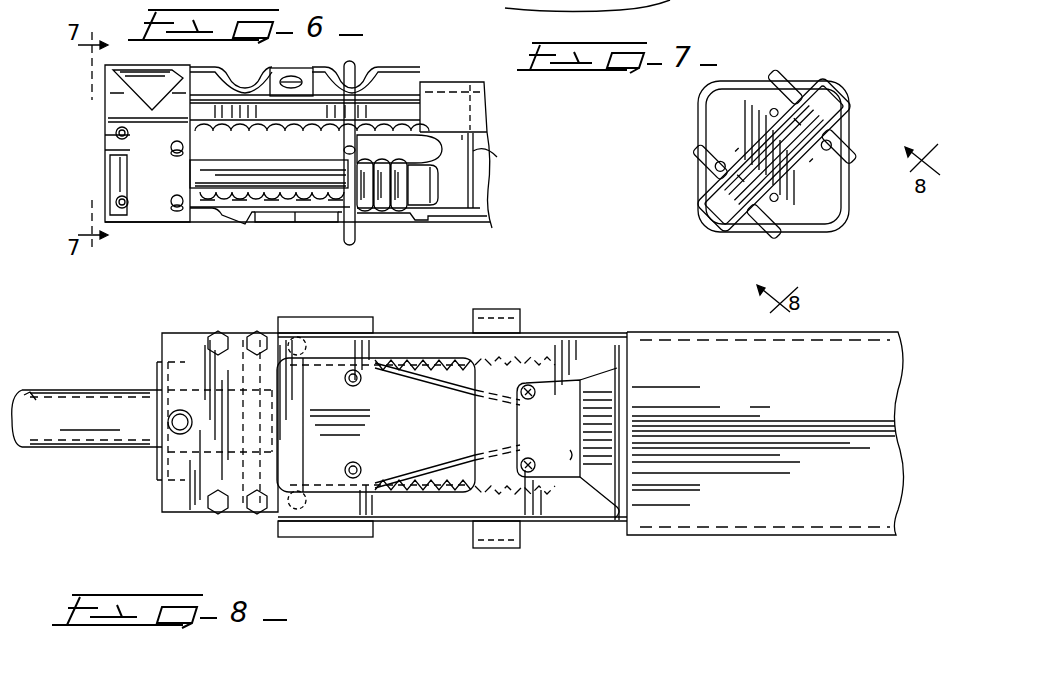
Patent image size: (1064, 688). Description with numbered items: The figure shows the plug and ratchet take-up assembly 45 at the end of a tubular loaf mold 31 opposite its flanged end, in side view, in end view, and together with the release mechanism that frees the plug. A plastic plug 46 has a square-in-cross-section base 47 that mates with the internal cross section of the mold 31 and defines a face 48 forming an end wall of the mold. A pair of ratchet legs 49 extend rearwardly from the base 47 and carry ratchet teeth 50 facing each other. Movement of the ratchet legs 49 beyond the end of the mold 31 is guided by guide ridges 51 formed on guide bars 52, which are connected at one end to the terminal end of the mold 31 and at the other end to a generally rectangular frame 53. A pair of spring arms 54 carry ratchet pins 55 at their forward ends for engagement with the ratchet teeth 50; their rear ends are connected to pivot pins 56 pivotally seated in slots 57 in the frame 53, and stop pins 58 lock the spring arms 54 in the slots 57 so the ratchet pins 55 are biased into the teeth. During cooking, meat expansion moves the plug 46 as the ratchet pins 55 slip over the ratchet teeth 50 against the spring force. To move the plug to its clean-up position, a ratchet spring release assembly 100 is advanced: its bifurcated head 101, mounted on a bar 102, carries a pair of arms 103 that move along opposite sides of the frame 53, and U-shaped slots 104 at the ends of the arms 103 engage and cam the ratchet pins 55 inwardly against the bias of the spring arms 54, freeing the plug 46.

In FIG. 6, the mold 31 is at (495, 222).
In FIG. 7, the mold 31 is at (712, 90).
In FIG. 8, the mold 31 is at (815, 353).
In FIG. 6, the plug and ratchet take-up assembly 45 is at (323, 238).
In FIG. 6, the plastic plug 46 is at (457, 198).
In FIG. 7, the plastic plug 46 is at (828, 200).
In FIG. 8, the plastic plug 46 is at (606, 386).
In FIG. 6, the base 47 is at (453, 165).
In FIG. 6, the face 48 is at (497, 157).
In FIG. 8, the face 48 is at (622, 427).
In FIG. 6, the ratchet legs 49 is at (391, 128).
In FIG. 7, the ratchet legs 49 is at (820, 103).
In FIG. 8, the ratchet legs 49 is at (418, 370).
In FIG. 6, the ratchet teeth 50 is at (383, 200).
In FIG. 7, the ratchet teeth 50 is at (778, 159).
In FIG. 8, the ratchet teeth 50 is at (452, 461).
In FIG. 6, the guide ridges 51 is at (245, 88).
In FIG. 6, the guide bars 52 is at (312, 69).
In FIG. 6, the frame 53 is at (200, 196).
In FIG. 7, the frame 53 is at (816, 183).
In FIG. 6, the spring arms 54 is at (262, 170).
In FIG. 8, the spring arms 54 is at (445, 383).
In FIG. 6, the ratchet pins 55 is at (350, 242).
In FIG. 7, the ratchet pins 55 is at (853, 153).
In FIG. 8, the ratchet pins 55 is at (532, 386).
In FIG. 6, the pivot pins 56 is at (127, 134).
In FIG. 7, the pivot pins 56 is at (708, 156).
In FIG. 6, the slots 57 is at (142, 133).
In FIG. 6, the stop pins 58 is at (182, 200).
In FIG. 7, the stop pins 58 is at (745, 178).
In FIG. 8, the ratchet spring release assembly 100 is at (206, 313).
In FIG. 8, the bifurcated head 101 is at (183, 498).
In FIG. 8, the bar 102 is at (75, 428).
In FIG. 8, the arms 103 is at (462, 503).
In FIG. 8, the U-shaped slots 104 is at (568, 476).